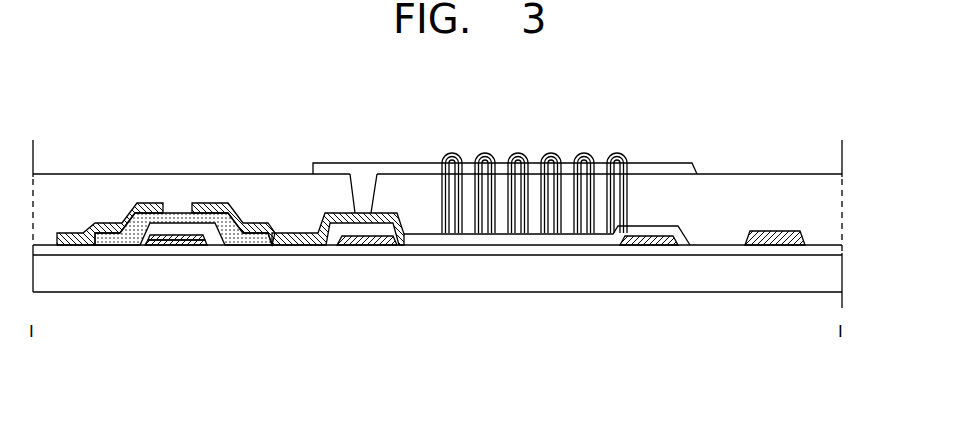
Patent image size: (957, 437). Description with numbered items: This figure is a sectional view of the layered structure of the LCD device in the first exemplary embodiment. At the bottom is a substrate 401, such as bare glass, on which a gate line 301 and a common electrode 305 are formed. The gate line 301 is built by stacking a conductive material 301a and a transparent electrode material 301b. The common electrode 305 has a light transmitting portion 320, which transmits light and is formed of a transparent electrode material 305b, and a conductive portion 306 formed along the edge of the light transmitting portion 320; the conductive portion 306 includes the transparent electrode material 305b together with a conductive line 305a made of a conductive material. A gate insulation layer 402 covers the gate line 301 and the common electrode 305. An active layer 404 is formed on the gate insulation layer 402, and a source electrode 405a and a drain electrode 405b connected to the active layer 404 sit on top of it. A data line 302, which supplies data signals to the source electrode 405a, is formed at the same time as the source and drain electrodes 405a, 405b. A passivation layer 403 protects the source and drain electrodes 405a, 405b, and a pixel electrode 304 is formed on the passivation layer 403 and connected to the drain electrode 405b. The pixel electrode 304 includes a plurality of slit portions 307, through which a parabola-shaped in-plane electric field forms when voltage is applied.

The gate line 301 is at (196, 322).
The conductive material 301a is at (158, 245).
The transparent electrode material 301b is at (187, 250).
The data line 302 is at (775, 245).
The pixel electrode 304 is at (388, 170).
The common electrode 305 is at (350, 297).
The conductive line 305a is at (340, 245).
The transparent electrode material 305b is at (375, 245).
The conductive portion 306 is at (680, 297).
The slit portions 307 is at (600, 157).
The light transmitting portion 320 is at (528, 213).
The substrate 401 is at (822, 276).
The gate insulation layer 402 is at (822, 250).
The passivation layer 403 is at (822, 208).
The active layer 404 is at (108, 245).
The source electrode 405a is at (137, 203).
The drain electrode 405b is at (207, 203).